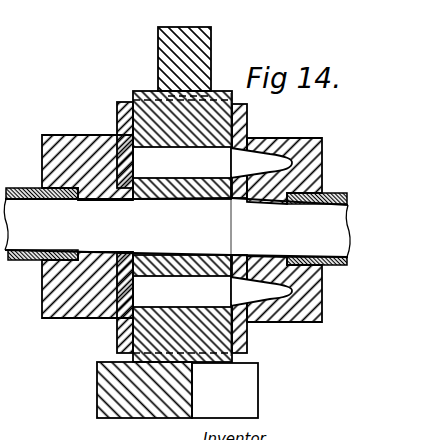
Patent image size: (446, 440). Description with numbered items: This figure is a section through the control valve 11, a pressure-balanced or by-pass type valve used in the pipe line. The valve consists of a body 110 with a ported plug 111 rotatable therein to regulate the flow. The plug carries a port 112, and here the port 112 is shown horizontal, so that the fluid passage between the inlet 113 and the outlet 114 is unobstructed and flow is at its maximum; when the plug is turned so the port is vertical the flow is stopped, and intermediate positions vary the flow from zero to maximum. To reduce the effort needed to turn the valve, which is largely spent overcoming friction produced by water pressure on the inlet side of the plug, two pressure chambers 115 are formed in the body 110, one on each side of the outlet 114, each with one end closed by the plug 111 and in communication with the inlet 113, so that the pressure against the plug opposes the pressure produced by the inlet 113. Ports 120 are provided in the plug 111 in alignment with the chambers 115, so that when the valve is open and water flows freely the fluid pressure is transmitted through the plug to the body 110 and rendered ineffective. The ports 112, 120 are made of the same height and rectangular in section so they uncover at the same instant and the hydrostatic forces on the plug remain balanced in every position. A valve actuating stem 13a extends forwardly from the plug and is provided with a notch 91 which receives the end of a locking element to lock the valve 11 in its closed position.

The control valve 11 is at (113, 122).
The ported plug 111 is at (133, 100).
The body 110 is at (72, 300).
The pressure chambers 115 is at (257, 165).
The ports 120 is at (182, 230).
The inlet 113 is at (68, 224).
The port 112 is at (182, 226).
The outlet 114 is at (290, 229).
The valve actuating stem 13a is at (97, 400).
The notch 91 is at (230, 394).